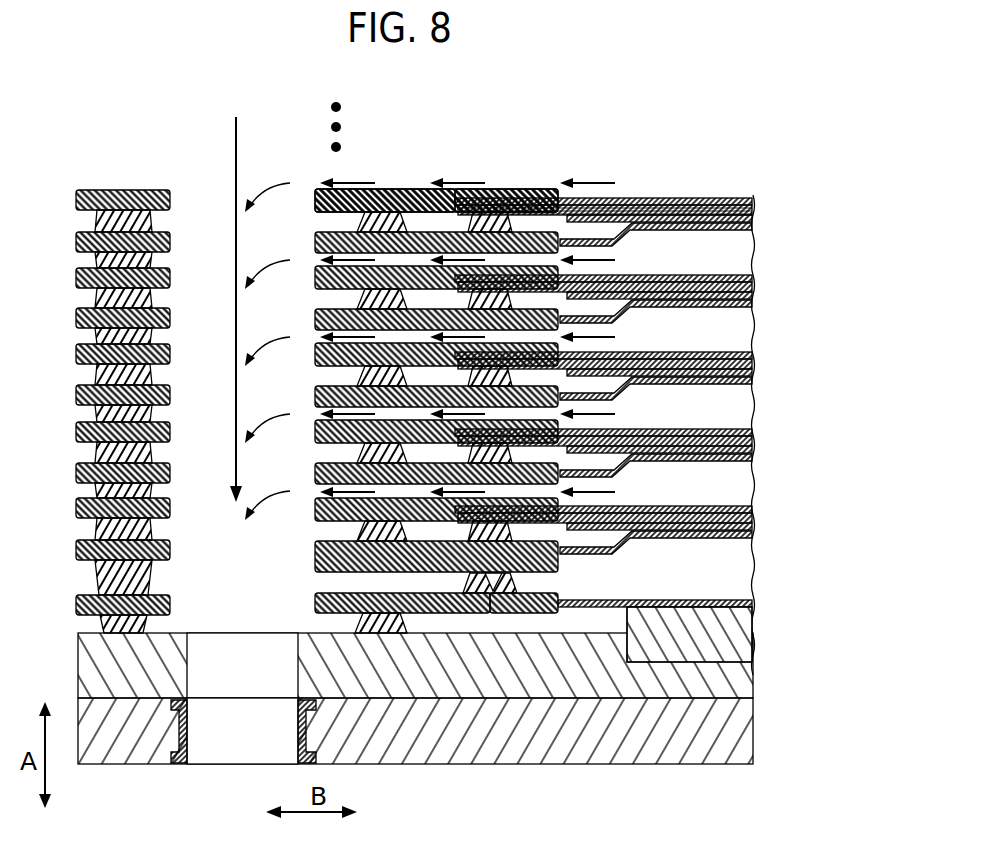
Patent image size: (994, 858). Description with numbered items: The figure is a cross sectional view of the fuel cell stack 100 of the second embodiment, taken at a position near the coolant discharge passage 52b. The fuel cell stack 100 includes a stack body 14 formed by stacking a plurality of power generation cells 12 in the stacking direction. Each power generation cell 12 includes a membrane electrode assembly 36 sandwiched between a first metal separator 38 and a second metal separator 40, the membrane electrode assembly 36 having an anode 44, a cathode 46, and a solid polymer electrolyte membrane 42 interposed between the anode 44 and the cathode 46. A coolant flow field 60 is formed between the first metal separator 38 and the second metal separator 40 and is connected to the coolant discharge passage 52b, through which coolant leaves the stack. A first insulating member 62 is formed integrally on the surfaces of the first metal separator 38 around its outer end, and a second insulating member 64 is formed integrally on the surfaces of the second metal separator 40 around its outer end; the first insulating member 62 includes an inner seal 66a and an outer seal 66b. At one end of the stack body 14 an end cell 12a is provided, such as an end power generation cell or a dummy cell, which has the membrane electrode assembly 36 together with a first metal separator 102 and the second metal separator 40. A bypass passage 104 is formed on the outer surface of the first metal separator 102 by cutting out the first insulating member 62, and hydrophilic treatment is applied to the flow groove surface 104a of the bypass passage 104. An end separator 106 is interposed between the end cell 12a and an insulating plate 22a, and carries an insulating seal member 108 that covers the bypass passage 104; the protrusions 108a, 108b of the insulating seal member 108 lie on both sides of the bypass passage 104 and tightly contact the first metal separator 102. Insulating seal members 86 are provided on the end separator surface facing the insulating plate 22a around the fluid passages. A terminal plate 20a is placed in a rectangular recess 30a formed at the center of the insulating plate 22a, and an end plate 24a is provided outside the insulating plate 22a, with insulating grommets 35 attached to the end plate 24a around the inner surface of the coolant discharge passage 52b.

The fuel cell stack 100 is at (186, 91).
The power generation cell 12 is at (589, 313).
The end cell 12a is at (820, 475).
The stack body 14 is at (593, 313).
The membrane electrode assembly 36 is at (638, 325).
The anode 44 is at (650, 202).
The solid polymer electrolyte membrane 42 is at (683, 202).
The cathode 46 is at (637, 160).
The second metal separator 40 is at (736, 346).
The first metal separator 38 is at (736, 385).
The coolant flow field 60 is at (712, 408).
The first insulating member 62 is at (100, 411).
The second insulating member 64 is at (73, 351).
The inner seal 66a is at (485, 189).
The outer seal 66b is at (384, 190).
The coolant discharge passage 52b is at (211, 506).
The first metal separator 102 is at (724, 538).
The bypass passage 104 is at (538, 626).
The flow groove surface 104a is at (496, 593).
The end separator 106 is at (724, 599).
The insulating seal member 86 is at (340, 635).
The insulating seal member 108 is at (437, 722).
The protrusion 108a is at (463, 613).
The protrusion 108b is at (515, 613).
The insulating plate 22a is at (730, 673).
The end plate 24a is at (728, 720).
The insulating grommet 35 is at (188, 724).
The terminal plate 20a is at (652, 640).
The rectangular recess 30a is at (716, 650).